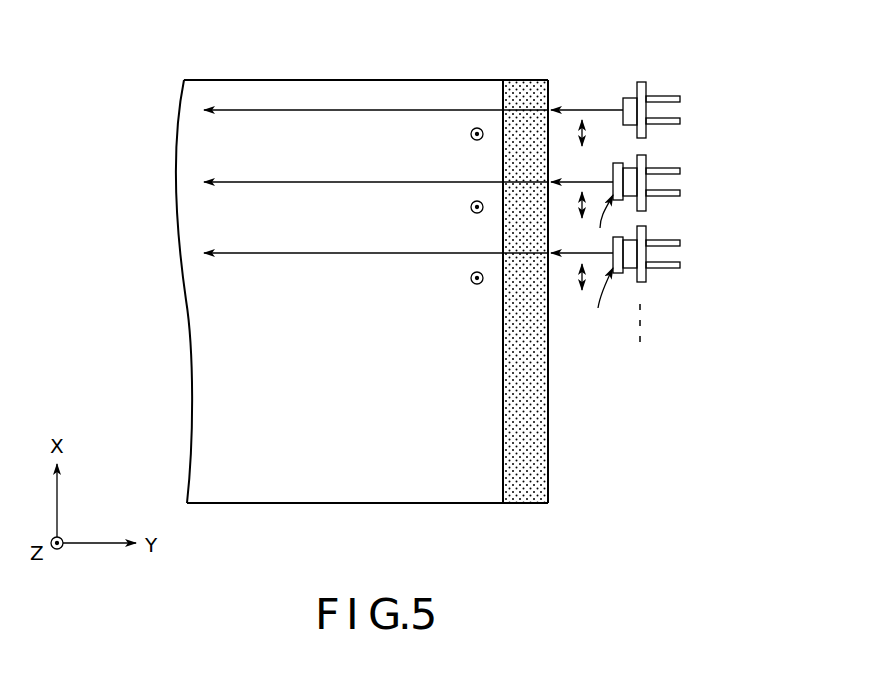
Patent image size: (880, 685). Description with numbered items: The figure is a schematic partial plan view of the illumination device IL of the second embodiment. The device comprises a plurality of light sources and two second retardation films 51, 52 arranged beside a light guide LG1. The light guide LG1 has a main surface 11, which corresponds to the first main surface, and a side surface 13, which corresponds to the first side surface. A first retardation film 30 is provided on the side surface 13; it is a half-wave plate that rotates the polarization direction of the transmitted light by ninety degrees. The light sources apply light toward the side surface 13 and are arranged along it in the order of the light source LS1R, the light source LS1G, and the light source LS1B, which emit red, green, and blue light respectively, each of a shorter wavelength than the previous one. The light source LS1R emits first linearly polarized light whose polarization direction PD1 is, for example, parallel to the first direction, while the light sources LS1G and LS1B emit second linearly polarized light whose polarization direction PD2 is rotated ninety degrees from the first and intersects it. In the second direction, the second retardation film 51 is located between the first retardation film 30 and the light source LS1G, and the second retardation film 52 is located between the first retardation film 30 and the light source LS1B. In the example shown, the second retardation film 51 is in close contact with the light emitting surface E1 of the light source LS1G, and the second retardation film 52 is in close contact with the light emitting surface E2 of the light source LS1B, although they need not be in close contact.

The main surface 11 is at (342, 486).
The illumination device IL is at (450, 61).
The light guide LG1 is at (405, 505).
The first retardation film 30 is at (537, 399).
The side surface 13 is at (532, 447).
The polarization direction PD1 is at (584, 131).
The polarization direction PD2 is at (470, 134).
The light source LS1R is at (668, 98).
The light source LS1G is at (668, 169).
The light source LS1B is at (668, 241).
The second retardation film 51 is at (618, 162).
The second retardation film 52 is at (618, 236).
The light emitting surface E1 is at (598, 223).
The light emitting surface E2 is at (598, 300).